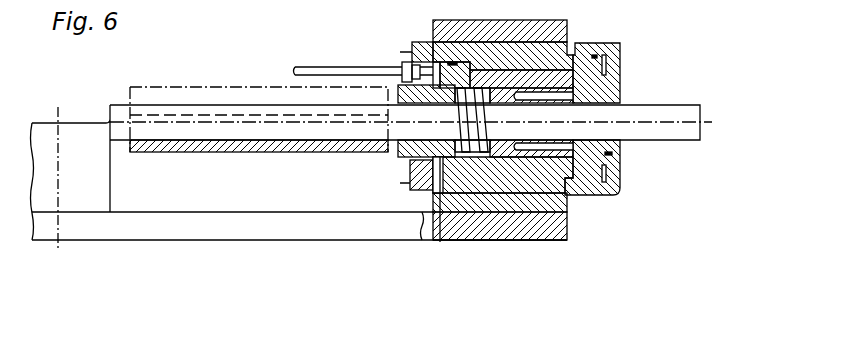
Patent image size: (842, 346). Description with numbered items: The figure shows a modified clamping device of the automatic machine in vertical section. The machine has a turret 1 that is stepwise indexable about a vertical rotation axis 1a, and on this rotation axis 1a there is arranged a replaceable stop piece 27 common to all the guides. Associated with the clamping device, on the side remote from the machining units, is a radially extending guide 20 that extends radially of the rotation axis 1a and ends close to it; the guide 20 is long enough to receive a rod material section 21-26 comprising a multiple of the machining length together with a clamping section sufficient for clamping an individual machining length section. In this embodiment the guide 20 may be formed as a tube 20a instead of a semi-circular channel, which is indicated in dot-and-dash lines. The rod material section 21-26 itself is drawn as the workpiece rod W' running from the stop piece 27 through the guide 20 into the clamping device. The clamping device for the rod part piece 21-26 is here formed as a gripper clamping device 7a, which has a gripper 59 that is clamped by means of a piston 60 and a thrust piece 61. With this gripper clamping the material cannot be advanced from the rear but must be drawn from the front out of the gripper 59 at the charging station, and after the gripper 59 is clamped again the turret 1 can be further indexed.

The turret 1 is at (332, 232).
The vertical rotation axis 1a is at (58, 203).
The replaceable stop piece 27 is at (86, 131).
The workpiece rod W' is at (411, 139).
The guide 20 is at (195, 152).
The tube 20a is at (143, 90).
The rod material section 21-26 is at (193, 110).
The thrust piece 61 is at (567, 213).
The gripper 59 is at (585, 150).
The piston 60 is at (440, 203).
The gripper clamping device 7a is at (538, 249).